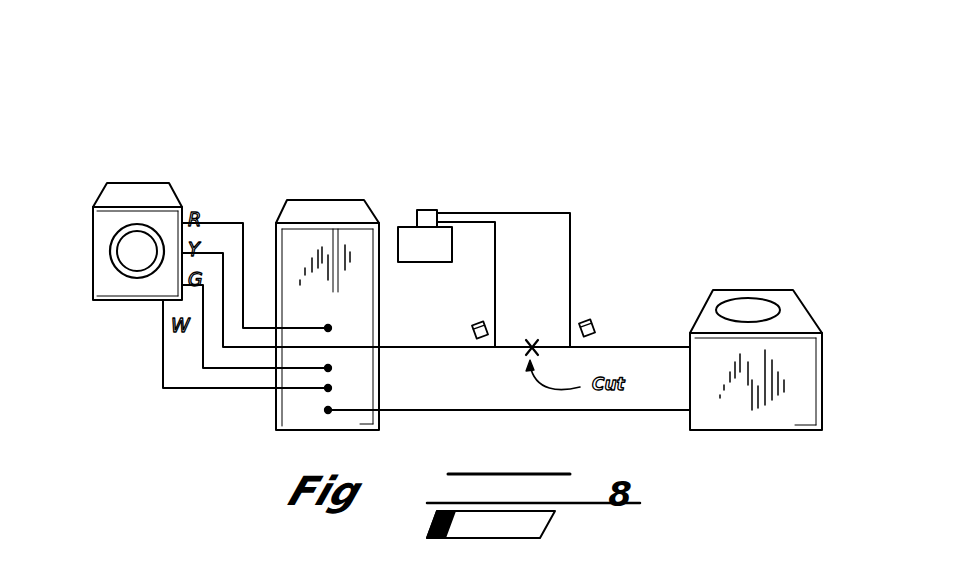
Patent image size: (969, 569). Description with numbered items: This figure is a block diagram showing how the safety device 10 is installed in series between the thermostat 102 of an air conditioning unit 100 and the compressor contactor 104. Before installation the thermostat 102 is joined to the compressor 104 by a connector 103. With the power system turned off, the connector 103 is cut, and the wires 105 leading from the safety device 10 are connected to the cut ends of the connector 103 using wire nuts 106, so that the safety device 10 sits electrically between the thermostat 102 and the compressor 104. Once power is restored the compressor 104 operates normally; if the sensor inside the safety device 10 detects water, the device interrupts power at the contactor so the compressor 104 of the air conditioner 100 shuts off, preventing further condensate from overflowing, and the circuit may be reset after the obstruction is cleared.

The safety device 10 is at (405, 187).
The air conditioning unit 100 is at (297, 430).
The thermostat 102 is at (176, 192).
The connector 103 is at (657, 347).
The compressor contactor 104 is at (807, 307).
The wires 105 is at (496, 243).
The wire nuts 106 is at (462, 324).